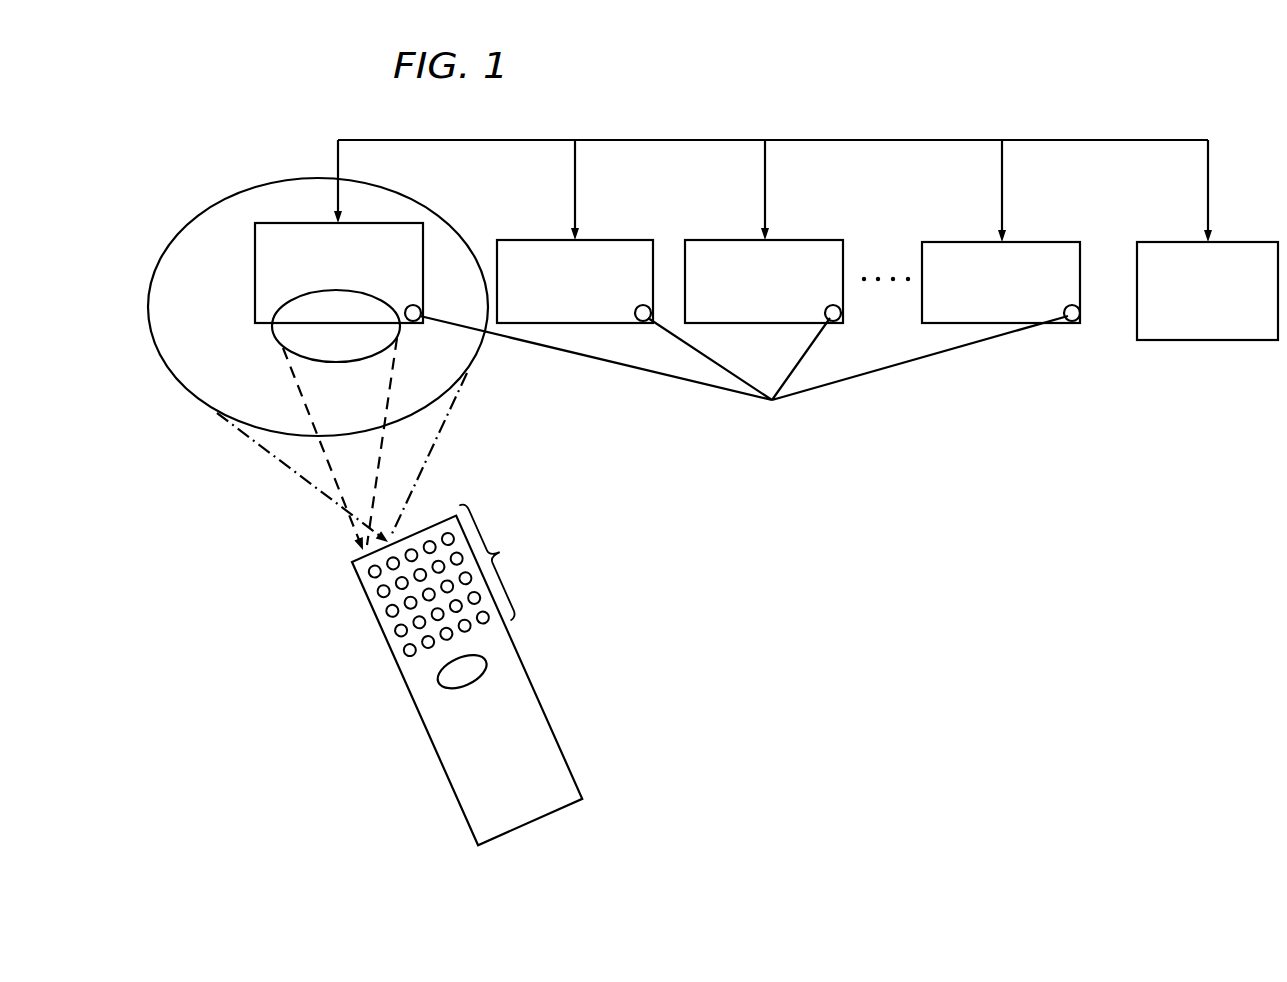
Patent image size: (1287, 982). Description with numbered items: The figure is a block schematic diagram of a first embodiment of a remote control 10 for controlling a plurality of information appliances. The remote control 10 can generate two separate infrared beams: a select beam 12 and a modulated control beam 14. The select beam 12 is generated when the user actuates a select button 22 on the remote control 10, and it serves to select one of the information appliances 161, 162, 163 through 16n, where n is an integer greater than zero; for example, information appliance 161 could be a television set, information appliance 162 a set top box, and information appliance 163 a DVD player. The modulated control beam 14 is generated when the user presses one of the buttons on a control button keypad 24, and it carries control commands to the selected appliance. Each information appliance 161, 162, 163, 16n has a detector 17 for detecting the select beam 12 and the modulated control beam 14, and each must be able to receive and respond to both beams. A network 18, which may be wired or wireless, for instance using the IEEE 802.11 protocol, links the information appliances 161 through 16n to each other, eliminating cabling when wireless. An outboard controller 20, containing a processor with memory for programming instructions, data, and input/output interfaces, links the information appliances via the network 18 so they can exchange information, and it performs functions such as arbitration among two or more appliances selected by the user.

The remote control 10 is at (557, 738).
The select beam 12 is at (283, 347).
The modulated control beam 14 is at (189, 397).
The information appliance 161 is at (282, 222).
The information appliance 162 is at (522, 240).
The information appliance 163 is at (724, 240).
The information appliance 16n is at (954, 241).
The detector 17 is at (742, 382).
The network 18 is at (860, 140).
The outboard controller 20 is at (1206, 341).
The select button 22 is at (487, 660).
The control button keypad 24 is at (500, 552).